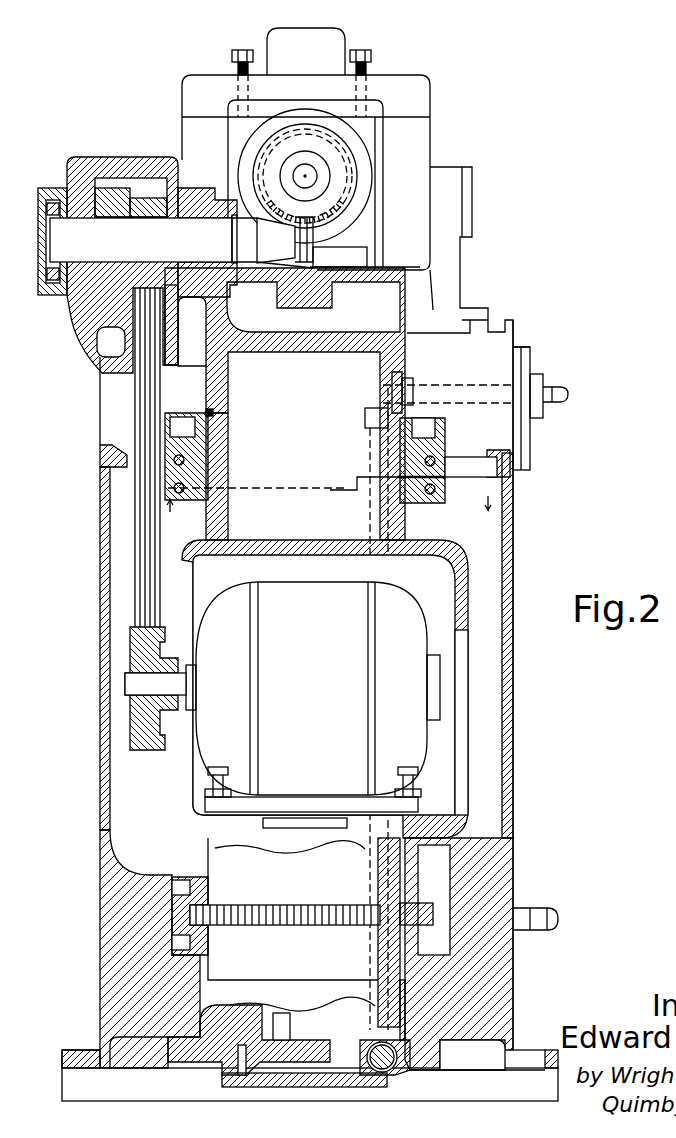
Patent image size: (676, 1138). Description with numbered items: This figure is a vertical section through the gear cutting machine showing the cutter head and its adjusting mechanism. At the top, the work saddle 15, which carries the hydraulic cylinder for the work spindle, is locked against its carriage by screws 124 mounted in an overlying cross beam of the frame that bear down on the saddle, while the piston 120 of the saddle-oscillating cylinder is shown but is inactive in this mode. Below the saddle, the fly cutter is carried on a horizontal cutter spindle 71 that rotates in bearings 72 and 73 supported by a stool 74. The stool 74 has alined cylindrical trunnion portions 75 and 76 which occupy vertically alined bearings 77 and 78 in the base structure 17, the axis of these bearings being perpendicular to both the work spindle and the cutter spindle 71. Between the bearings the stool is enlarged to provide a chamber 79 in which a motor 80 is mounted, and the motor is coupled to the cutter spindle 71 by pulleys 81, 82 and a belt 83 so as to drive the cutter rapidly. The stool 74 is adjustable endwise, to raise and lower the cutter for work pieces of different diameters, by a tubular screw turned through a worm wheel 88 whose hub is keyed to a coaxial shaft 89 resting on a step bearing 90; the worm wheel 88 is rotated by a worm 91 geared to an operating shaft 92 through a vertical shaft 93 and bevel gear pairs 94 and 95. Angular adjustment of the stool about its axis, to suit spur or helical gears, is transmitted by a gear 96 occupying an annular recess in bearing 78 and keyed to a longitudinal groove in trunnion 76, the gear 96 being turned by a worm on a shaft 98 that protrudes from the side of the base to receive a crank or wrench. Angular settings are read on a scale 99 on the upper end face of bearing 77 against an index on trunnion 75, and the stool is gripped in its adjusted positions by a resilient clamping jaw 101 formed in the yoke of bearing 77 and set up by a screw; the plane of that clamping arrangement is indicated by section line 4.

The section line 4- 4 is at (329, 509).
The work saddle 15 is at (370, 133).
The base structure 17 is at (102, 524).
The cutter spindle 71 is at (268, 256).
The bearing 72 is at (207, 190).
The bearing 73 is at (70, 190).
The stool 74 is at (405, 351).
The trunnion portion 75 is at (226, 519).
The trunnion portion 76 is at (215, 853).
The bearing 77 is at (205, 458).
The bearing 78 is at (198, 876).
The chamber 79 is at (455, 598).
The motor 80 is at (360, 618).
The pulley 81 is at (130, 637).
The pulley 82 is at (73, 314).
The belt 83 is at (140, 417).
The worm wheel 88 is at (238, 1062).
The shaft 89 is at (292, 1020).
The step bearing 90 is at (304, 1088).
The worm 91 is at (396, 1066).
The operating shaft 92 is at (551, 390).
The vertical shaft 93 is at (368, 505).
The bevel gear pair 94 is at (392, 388).
The bevel gear pair 95 is at (425, 1046).
The gear 96 is at (332, 915).
The shaft 98 is at (526, 916).
The scale 99 is at (207, 410).
The clamping jaw 101 is at (420, 496).
The piston 120 is at (337, 42).
The screws 124 is at (232, 56).